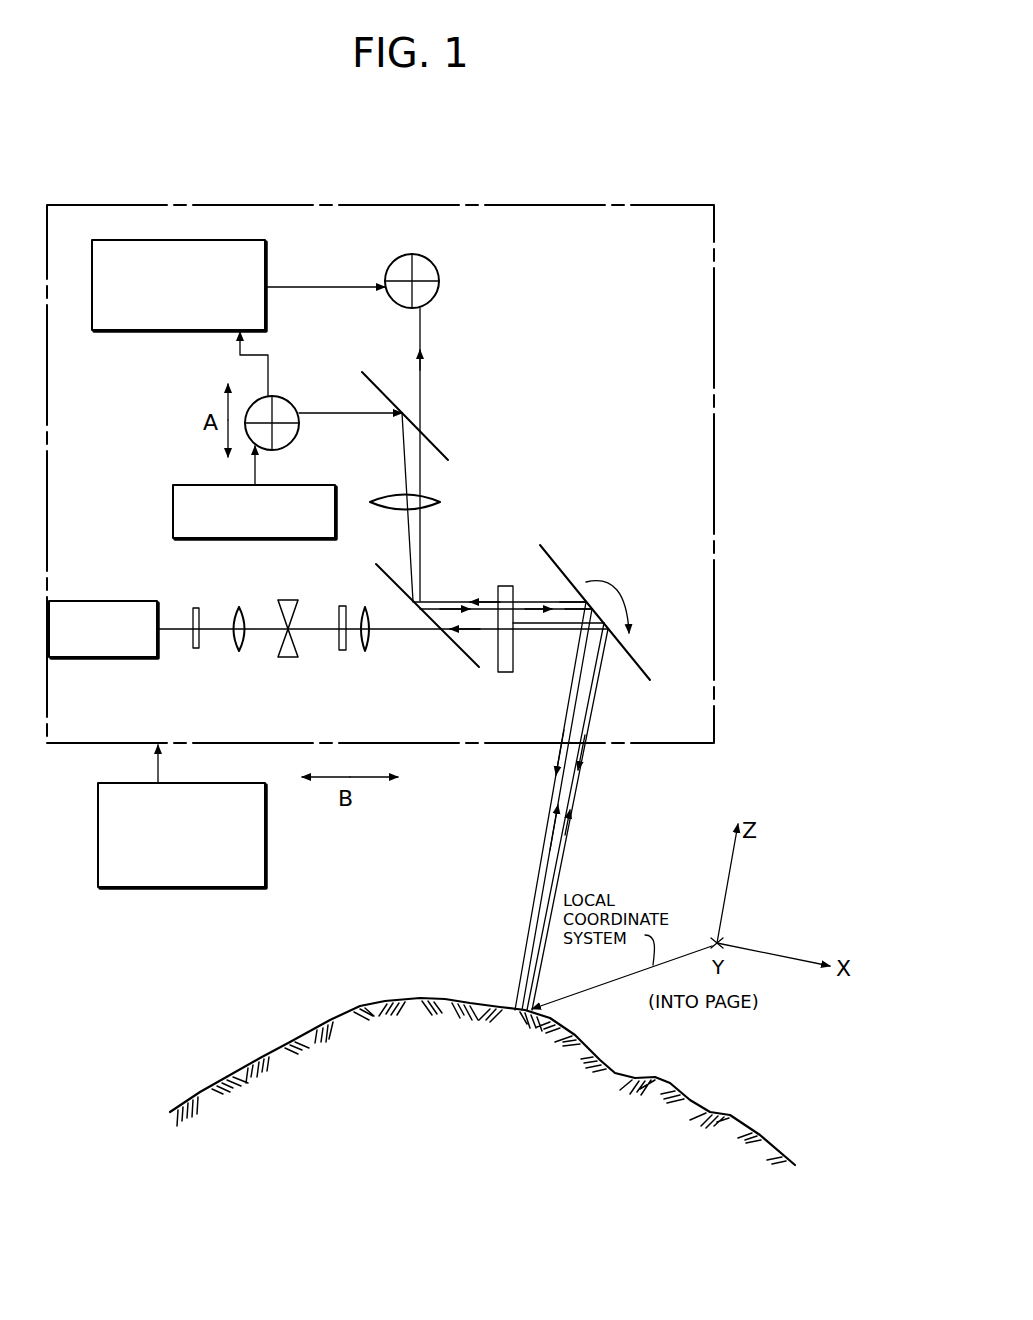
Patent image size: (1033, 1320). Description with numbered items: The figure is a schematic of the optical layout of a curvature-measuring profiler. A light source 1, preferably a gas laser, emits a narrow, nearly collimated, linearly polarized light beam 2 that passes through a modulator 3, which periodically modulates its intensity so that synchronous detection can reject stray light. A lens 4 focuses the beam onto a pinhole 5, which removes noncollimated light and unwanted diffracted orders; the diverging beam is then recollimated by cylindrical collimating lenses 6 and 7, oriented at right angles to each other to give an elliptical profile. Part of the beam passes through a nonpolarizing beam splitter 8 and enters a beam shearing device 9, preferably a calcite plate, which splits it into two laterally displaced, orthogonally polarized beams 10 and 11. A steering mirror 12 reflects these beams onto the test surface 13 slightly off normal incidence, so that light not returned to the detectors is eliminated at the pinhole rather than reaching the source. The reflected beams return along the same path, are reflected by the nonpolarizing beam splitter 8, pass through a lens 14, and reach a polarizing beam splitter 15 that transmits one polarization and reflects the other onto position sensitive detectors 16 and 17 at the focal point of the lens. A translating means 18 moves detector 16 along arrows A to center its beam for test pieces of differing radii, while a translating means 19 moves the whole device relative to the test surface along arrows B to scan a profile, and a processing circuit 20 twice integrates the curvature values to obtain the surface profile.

The light source 1 is at (107, 606).
The light beam 2 is at (175, 625).
The modulator 3 is at (197, 648).
The lens 4 is at (241, 606).
The pinhole 5 is at (293, 621).
The cylindrical collimating lens 6 is at (343, 650).
The cylindrical collimating lens 7 is at (366, 606).
The nonpolarizing beam splitter 8 is at (445, 637).
The beam shearing device 9 is at (505, 586).
The beam 10 is at (515, 633).
The beam 11 is at (568, 620).
The steering mirror 12 is at (628, 655).
The test surface 13 is at (518, 1020).
The lens 14 is at (435, 498).
The polarizing beam splitter 15 is at (433, 440).
The position sensitive detector 16 is at (286, 446).
The position sensitive detector 17 is at (432, 266).
The translating means 18 is at (335, 515).
The translating means 19 is at (265, 867).
The processing circuit 20 is at (224, 250).